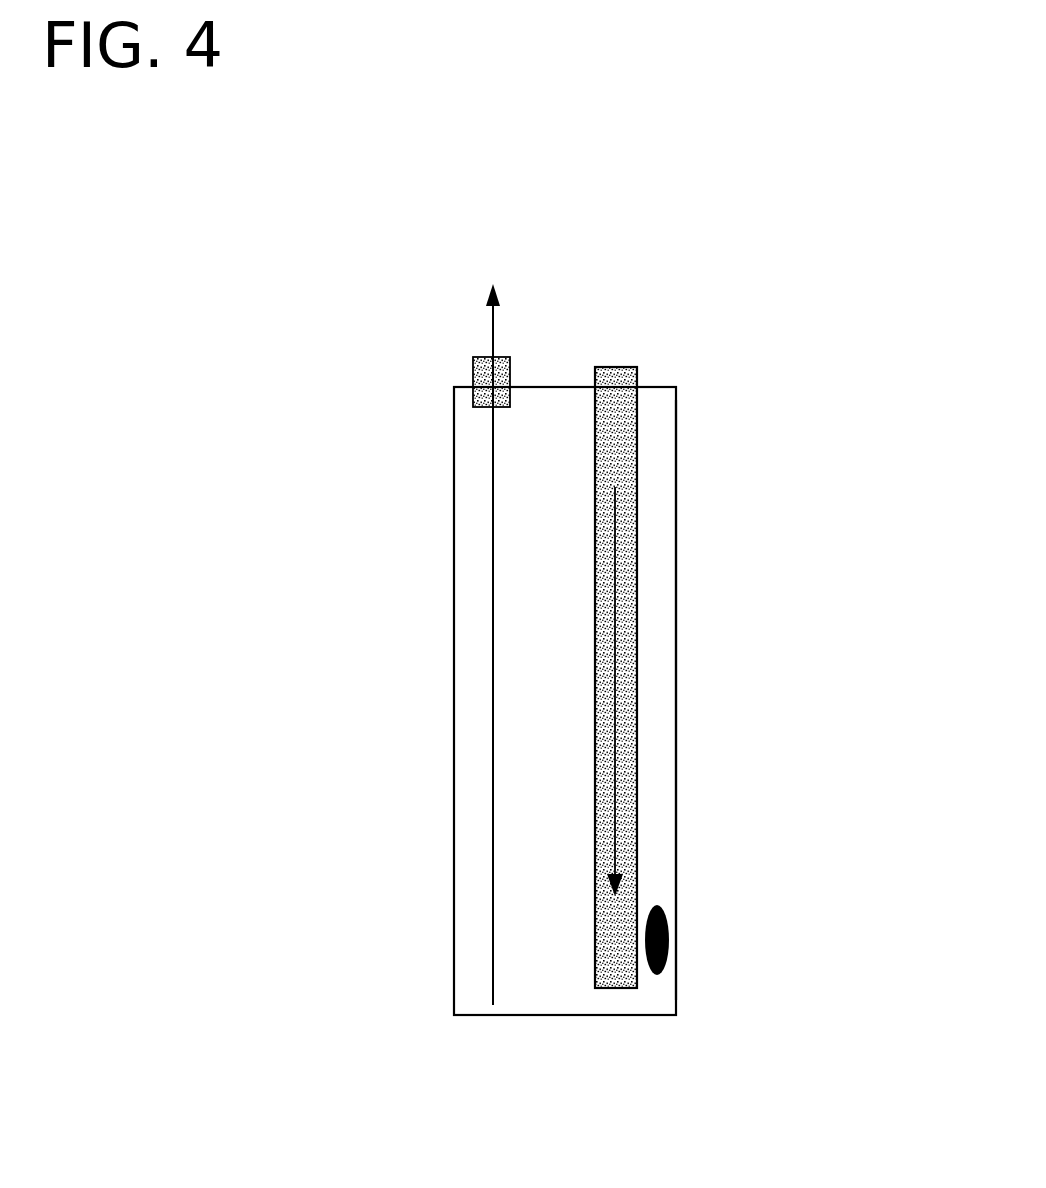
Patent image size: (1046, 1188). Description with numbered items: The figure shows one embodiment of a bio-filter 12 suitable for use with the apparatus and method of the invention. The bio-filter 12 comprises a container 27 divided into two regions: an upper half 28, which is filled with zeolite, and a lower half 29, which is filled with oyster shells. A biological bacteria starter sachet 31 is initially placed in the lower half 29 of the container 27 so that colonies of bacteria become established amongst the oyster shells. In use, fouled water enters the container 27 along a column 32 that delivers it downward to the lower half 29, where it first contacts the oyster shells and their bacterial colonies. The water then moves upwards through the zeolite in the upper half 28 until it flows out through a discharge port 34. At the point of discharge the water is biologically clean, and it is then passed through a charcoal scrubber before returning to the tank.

The bio-filter 12 is at (702, 568).
The container 27 is at (678, 666).
The upper half 28 is at (476, 592).
The lower half 29 is at (476, 855).
The biological bacteria starter sachet 31 is at (752, 898).
The column 32 is at (690, 651).
The discharge port 34 is at (492, 630).